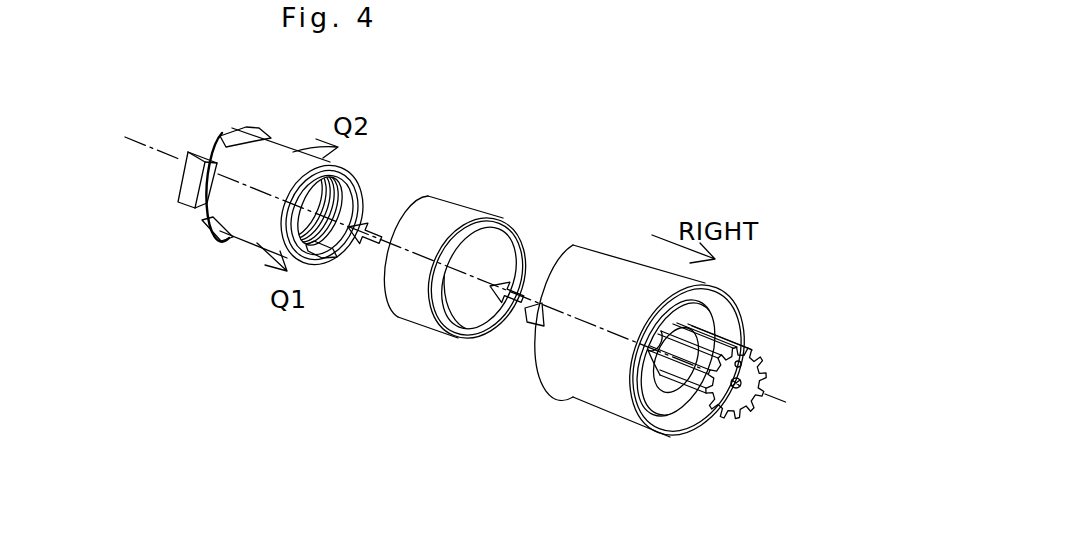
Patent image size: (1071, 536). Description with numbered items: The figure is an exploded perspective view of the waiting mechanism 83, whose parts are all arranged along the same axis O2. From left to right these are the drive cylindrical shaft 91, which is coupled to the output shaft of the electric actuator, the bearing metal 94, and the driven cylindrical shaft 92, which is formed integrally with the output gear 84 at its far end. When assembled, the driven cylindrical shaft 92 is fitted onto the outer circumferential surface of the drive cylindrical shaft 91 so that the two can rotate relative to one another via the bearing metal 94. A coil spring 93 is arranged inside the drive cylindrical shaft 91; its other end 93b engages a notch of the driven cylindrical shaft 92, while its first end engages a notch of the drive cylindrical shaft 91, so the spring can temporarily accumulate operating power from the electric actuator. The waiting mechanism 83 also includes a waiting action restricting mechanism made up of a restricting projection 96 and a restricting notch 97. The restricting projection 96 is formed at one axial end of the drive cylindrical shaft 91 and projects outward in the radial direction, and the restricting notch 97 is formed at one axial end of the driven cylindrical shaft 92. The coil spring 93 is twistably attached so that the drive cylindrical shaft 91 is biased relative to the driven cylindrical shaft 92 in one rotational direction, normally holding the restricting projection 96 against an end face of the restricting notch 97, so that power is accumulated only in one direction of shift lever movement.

The axis O2 is at (178, 153).
The waiting mechanism 83 is at (538, 158).
The output gear 84 is at (722, 398).
The drive cylindrical shaft 91 is at (241, 233).
The driven cylindrical shaft 92 is at (590, 373).
The coil spring 93 is at (310, 205).
The other end of the coil spring 93b is at (330, 262).
The bearing metal 94 is at (420, 313).
The restricting projection 96 is at (193, 208).
The restricting notch 97 is at (535, 332).